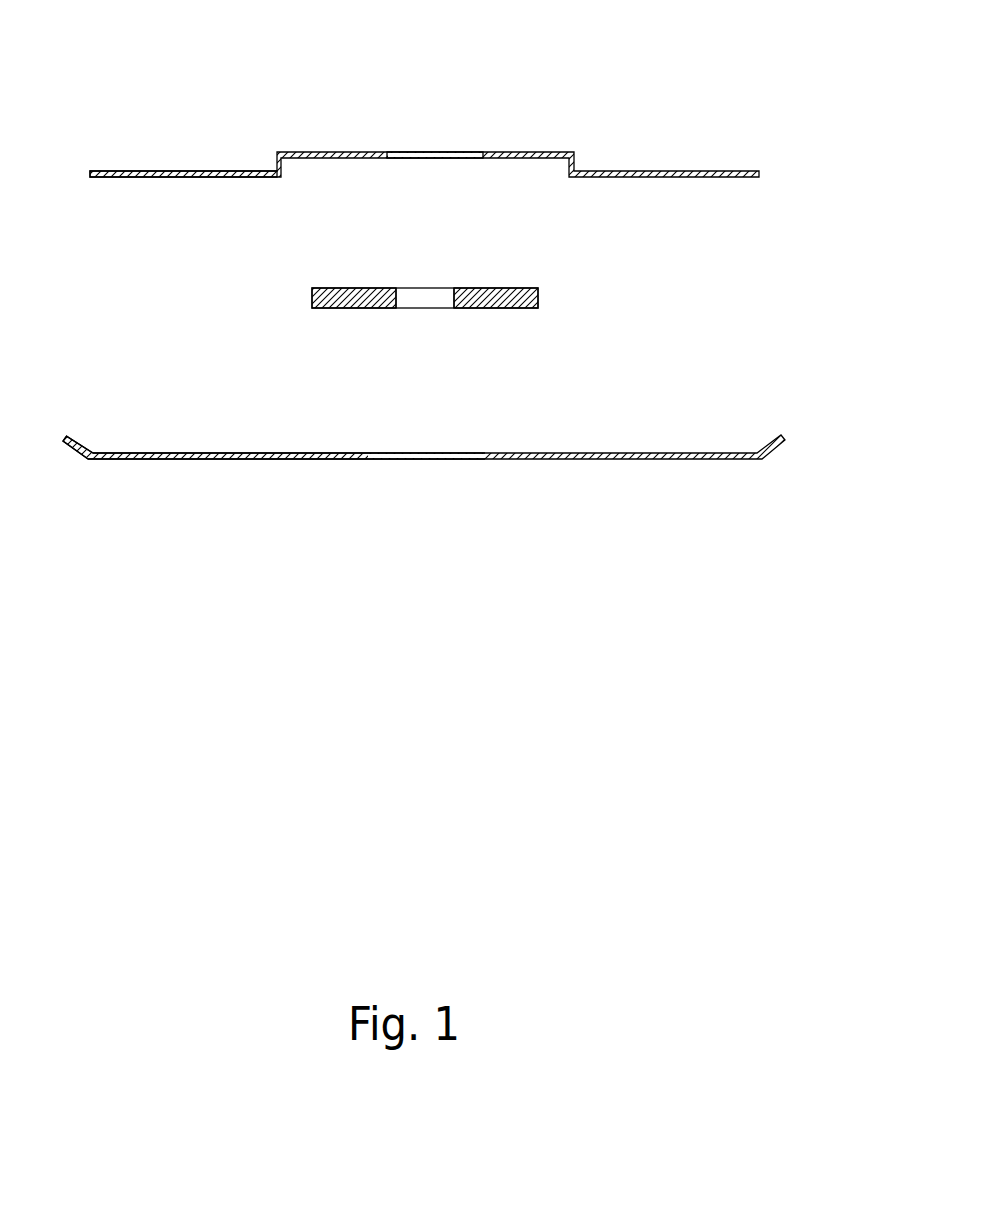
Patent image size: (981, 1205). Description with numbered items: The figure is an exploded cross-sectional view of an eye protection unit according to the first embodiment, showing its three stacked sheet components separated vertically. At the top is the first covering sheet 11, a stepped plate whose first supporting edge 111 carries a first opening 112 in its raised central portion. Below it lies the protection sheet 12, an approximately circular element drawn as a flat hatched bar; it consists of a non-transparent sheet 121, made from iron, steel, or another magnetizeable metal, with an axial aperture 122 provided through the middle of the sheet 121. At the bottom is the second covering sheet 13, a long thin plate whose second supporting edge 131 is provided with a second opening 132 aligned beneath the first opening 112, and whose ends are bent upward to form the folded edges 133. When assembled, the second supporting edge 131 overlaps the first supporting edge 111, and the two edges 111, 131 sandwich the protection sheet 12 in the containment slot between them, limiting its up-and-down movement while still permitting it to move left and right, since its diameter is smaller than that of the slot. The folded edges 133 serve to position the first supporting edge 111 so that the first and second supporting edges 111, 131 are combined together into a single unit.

The first covering sheet 11 is at (424, 108).
The first supporting edge 111 is at (165, 172).
The first opening 112 is at (387, 154).
The protection sheet 12 is at (503, 263).
The non-transparent sheet 121 is at (537, 297).
The axial aperture 122 is at (397, 298).
The second covering sheet 13 is at (424, 492).
The second supporting edge 131 is at (277, 455).
The second opening 132 is at (433, 457).
The folded edges 133 is at (77, 445).